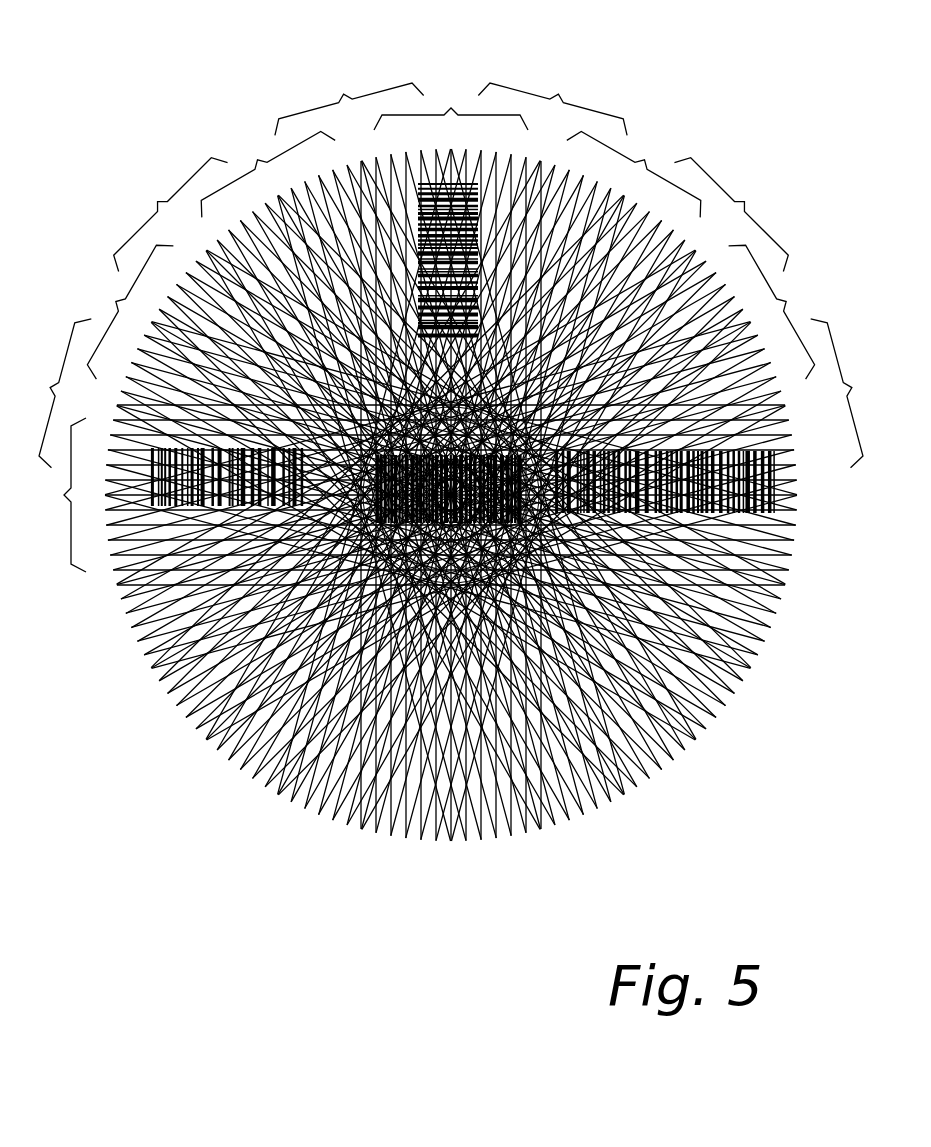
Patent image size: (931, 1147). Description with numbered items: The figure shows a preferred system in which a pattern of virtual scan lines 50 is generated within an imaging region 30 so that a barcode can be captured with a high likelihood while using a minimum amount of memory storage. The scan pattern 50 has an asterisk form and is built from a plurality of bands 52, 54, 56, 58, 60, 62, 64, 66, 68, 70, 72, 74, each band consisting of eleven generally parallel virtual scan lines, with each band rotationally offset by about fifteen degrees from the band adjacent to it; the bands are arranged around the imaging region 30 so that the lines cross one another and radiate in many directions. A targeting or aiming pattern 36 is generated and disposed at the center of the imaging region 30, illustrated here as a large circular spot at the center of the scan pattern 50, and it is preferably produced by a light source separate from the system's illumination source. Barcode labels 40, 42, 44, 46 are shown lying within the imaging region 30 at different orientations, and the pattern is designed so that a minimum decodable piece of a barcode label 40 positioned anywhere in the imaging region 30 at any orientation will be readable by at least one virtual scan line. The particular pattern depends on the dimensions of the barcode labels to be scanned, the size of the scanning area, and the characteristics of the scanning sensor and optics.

The imaging region 30 is at (250, 58).
The aiming pattern 36 is at (478, 430).
The barcode label 40 is at (528, 560).
The barcode label 42 is at (228, 500).
The barcode label 44 is at (455, 190).
The barcode label 46 is at (740, 507).
The pattern of virtual scan lines 50 is at (525, 793).
The band 52 is at (421, 495).
The band 54 is at (419, 492).
The band 56 is at (436, 490).
The band 58 is at (431, 475).
The fifth angular sector 60 is at (446, 480).
The band 62 is at (448, 460).
The band 64 is at (451, 463).
The band 66 is at (454, 459).
The band 68 is at (455, 480).
The band 70 is at (471, 475).
The band 72 is at (465, 490).
The band 74 is at (482, 492).